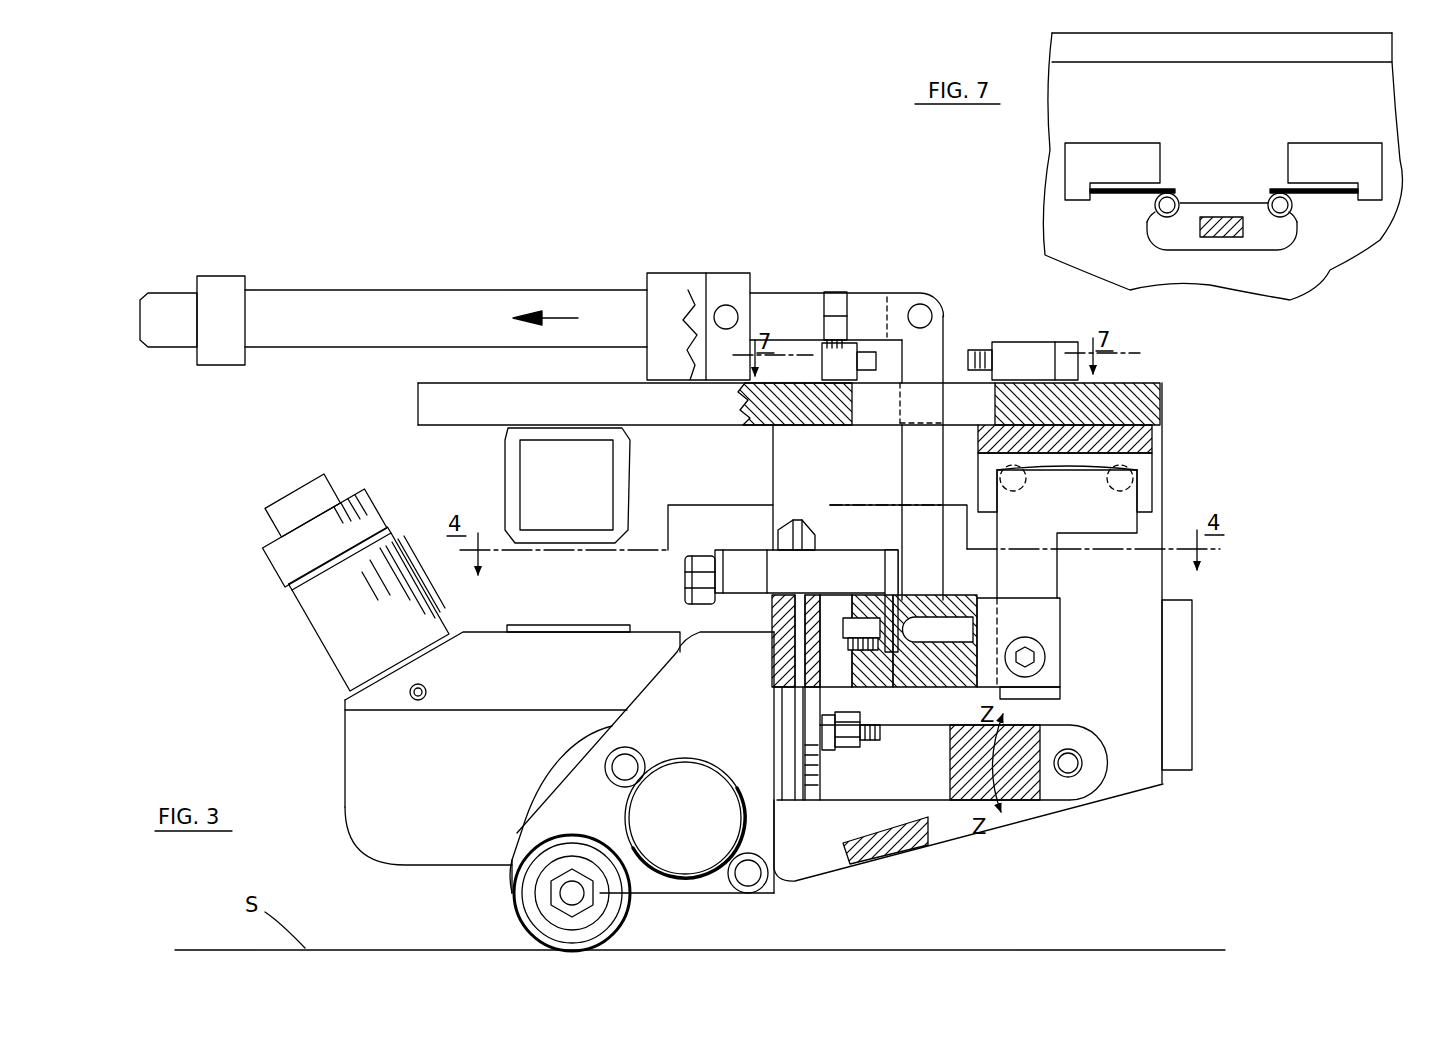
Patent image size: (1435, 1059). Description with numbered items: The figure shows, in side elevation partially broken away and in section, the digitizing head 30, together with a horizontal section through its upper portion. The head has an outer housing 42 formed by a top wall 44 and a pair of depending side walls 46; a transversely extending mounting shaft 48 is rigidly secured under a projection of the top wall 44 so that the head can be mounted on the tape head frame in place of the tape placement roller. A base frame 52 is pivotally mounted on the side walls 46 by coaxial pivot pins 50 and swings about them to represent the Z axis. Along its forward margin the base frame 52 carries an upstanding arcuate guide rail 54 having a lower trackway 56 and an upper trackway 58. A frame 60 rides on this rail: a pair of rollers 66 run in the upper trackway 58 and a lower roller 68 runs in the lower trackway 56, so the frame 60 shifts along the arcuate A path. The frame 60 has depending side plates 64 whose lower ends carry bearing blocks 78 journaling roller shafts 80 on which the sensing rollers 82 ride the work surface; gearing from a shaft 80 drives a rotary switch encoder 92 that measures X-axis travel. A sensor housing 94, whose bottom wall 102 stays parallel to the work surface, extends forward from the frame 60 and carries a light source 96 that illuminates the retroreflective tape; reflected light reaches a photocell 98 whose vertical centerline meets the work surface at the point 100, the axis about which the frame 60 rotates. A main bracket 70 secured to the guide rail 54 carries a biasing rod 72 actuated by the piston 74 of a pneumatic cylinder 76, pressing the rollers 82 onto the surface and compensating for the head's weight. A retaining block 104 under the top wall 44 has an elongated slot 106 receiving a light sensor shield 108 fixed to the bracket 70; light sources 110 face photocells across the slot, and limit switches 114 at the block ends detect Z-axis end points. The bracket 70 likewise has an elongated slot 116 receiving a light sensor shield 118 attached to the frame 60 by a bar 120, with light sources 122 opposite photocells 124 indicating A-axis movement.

In FIG. 3, the digitizing head 30 is at (1178, 385).
In FIG. 3, the outer housing 42 is at (1188, 585).
In FIG. 3, the top wall 44 is at (1122, 397).
In FIG. 7, the top wall 44 is at (1353, 233).
In FIG. 3, the side walls 46 is at (1148, 770).
In FIG. 3, the mounting shaft 48 is at (540, 482).
In FIG. 3, the pivot pins 50 is at (1072, 770).
In FIG. 3, the base frame 52 is at (930, 813).
In FIG. 3, the guide rail 54 is at (788, 658).
In FIG. 3, the lower trackway 56 is at (798, 690).
In FIG. 3, the upper trackway 58 is at (812, 600).
In FIG. 3, the frame 60 is at (768, 538).
In FIG. 3, the side plates 64 is at (667, 890).
In FIG. 3, the rollers 66 is at (805, 530).
In FIG. 3, the lower roller 68 is at (803, 800).
In FIG. 3, the main bracket 70 is at (985, 612).
In FIG. 3, the biasing rod 72 is at (932, 352).
In FIG. 7, the biasing rod 72 is at (1215, 237).
In FIG. 3, the piston 74 is at (795, 307).
In FIG. 3, the pneumatic cylinder 76 is at (450, 310).
In FIG. 3, the bearing blocks 78 is at (575, 862).
In FIG. 3, the roller shafts 80 is at (565, 890).
In FIG. 3, the sensing rollers 82 is at (513, 901).
In FIG. 3, the rotary switch encoder 92 is at (700, 793).
In FIG. 3, the sensor housing 94 is at (370, 753).
In FIG. 3, the light source 96 is at (333, 616).
In FIG. 3, the photocell 98 is at (578, 624).
In FIG. 3, the point 100 is at (612, 930).
In FIG. 3, the bottom wall 102 is at (402, 838).
In FIG. 3, the retaining block 104 is at (1153, 427).
In FIG. 3, the elongated slot 106 is at (1150, 460).
In FIG. 3, the light sensor shield 108 is at (1078, 517).
In FIG. 3, the light sources 110 is at (1140, 472).
In FIG. 3, the limit switches 114 is at (848, 330).
In FIG. 7, the limit switches 114 is at (1112, 160).
In FIG. 3, the elongated slot 116 is at (880, 655).
In FIG. 3, the light sensor shield 118 is at (900, 578).
In FIG. 3, the bar 120 is at (787, 573).
In FIG. 3, the light sources 122 is at (930, 632).
In FIG. 3, the photocells 124 is at (858, 618).